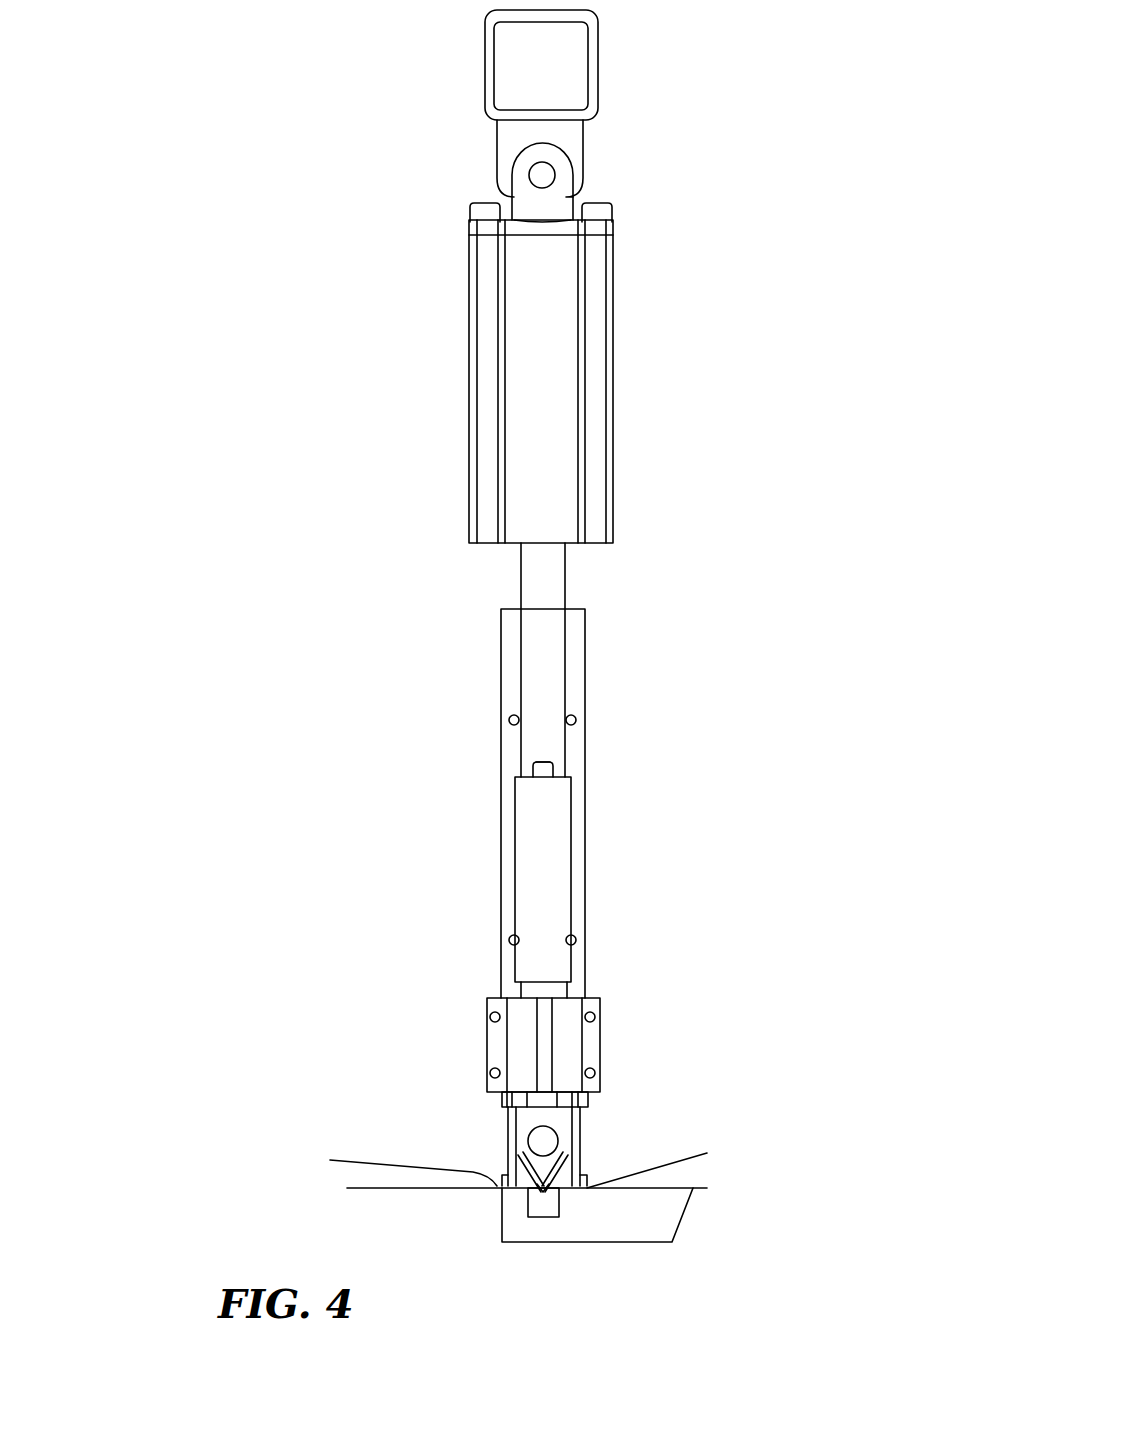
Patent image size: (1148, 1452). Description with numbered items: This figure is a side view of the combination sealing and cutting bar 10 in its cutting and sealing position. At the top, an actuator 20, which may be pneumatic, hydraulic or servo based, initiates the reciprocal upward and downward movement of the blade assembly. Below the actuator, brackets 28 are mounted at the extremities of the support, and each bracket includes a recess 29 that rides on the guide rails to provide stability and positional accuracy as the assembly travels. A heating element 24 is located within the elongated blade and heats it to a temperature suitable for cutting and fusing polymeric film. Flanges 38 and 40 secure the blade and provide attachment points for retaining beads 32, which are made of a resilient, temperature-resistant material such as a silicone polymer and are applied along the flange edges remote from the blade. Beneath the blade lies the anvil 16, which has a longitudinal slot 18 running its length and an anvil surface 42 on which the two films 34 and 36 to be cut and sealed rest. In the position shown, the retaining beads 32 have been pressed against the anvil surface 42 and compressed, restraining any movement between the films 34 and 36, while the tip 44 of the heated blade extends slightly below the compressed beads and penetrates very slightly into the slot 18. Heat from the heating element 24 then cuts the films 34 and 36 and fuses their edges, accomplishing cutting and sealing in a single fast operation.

The combination sealing and cutting bar 10 is at (290, 732).
The anvil 16 is at (633, 1228).
The slot 18 is at (550, 1210).
The actuator 20 is at (665, 550).
The heating element 24 is at (548, 1138).
The brackets 28 is at (593, 1039).
The recess 29 is at (543, 1030).
The retaining beads 32 is at (505, 1177).
The film 34 is at (375, 1163).
The film 36 is at (705, 1185).
The flange 38 is at (578, 1115).
The flange 40 is at (510, 1120).
The anvil surface 42 is at (683, 1189).
The tip 44 is at (522, 1192).